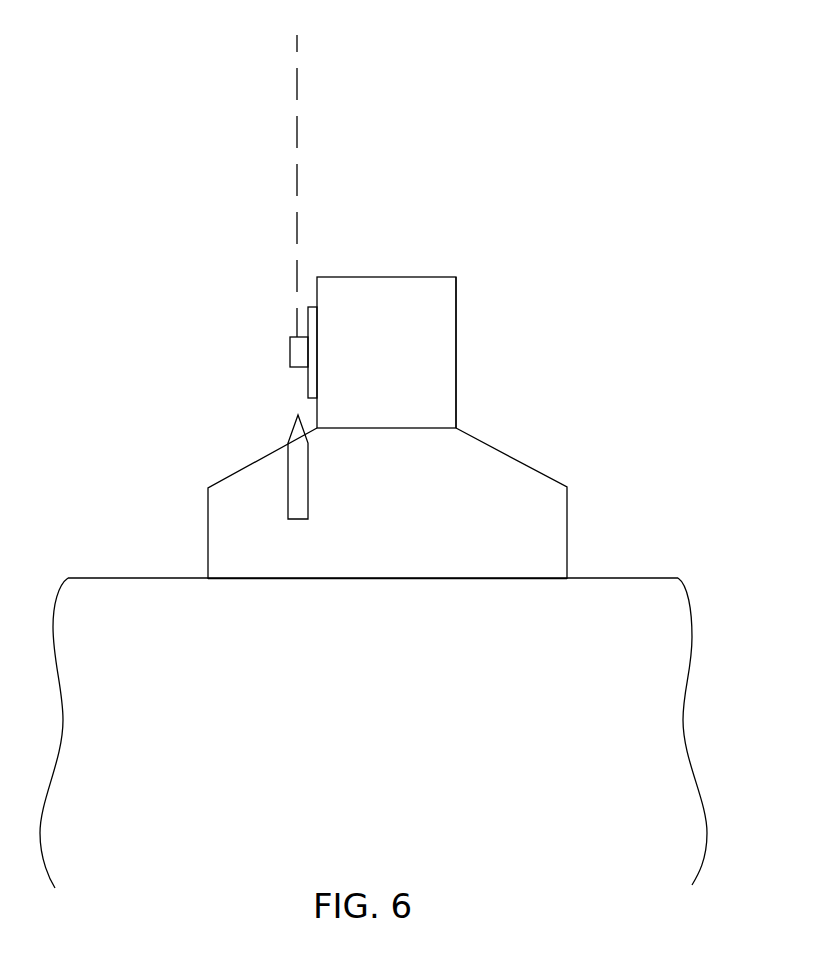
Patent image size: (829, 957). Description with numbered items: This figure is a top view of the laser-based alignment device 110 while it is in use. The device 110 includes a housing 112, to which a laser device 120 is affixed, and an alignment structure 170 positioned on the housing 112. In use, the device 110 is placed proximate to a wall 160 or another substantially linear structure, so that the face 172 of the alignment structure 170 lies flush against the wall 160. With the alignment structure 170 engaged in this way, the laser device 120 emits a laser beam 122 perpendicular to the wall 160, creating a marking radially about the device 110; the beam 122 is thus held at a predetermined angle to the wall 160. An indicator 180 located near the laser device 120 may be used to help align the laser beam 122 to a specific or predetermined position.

The laser-based alignment device 110 is at (417, 308).
The housing 112 is at (457, 333).
The laser device 120 is at (288, 351).
The laser beam 122 is at (297, 127).
The wall 160 is at (612, 638).
The alignment structure 170 is at (463, 488).
The face 172 is at (493, 578).
The indicator 180 is at (288, 473).